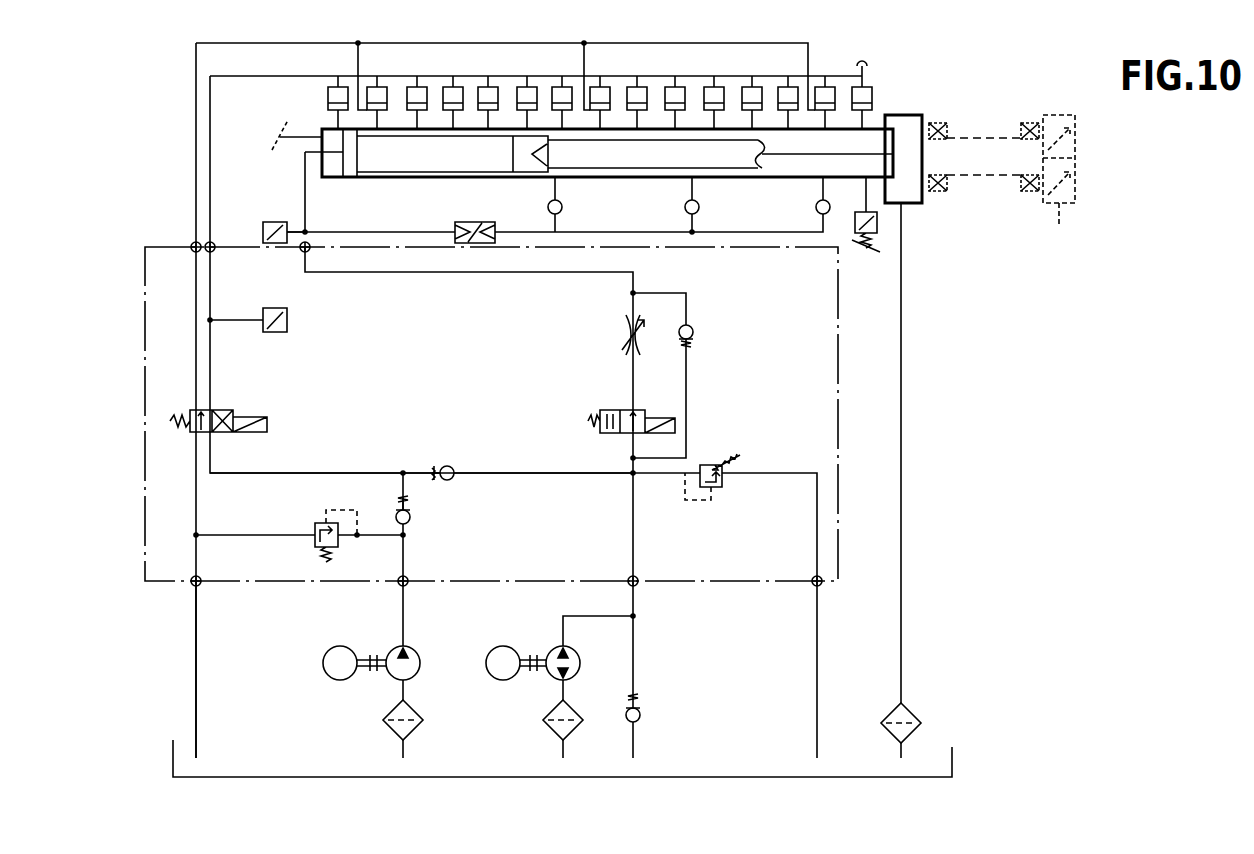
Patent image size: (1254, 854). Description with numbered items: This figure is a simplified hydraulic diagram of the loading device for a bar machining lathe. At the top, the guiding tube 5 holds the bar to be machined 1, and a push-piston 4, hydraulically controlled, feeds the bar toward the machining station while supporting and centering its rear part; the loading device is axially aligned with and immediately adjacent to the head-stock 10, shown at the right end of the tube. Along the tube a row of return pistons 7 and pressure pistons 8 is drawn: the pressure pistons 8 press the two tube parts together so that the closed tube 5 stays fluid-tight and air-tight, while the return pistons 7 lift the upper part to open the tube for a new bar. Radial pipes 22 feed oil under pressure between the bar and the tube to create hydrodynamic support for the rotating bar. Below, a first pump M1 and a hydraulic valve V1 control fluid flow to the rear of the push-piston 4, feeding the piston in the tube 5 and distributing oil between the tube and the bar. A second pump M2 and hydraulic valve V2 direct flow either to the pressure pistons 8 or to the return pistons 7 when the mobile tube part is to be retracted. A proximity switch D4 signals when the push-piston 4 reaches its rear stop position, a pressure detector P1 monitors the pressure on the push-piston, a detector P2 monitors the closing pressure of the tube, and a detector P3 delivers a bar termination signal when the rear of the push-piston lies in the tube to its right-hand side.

The bar to be machined 1 is at (648, 156).
The push-piston 4 is at (437, 163).
The guiding tube 5 is at (792, 168).
The return pistons 7 is at (381, 86).
The pressure pistons 8 is at (486, 87).
The head-stock 10 is at (1058, 228).
The radial pipes 22 is at (548, 200).
The proximity switch D4 is at (268, 135).
The pressure detector P1 is at (263, 222).
The pressure detector P2 is at (288, 322).
The pressure detector P3 is at (866, 251).
The hydraulic valve V1 is at (600, 415).
The hydraulic valve V2 is at (253, 418).
The first pump M1 is at (511, 672).
The second pump M2 is at (343, 672).